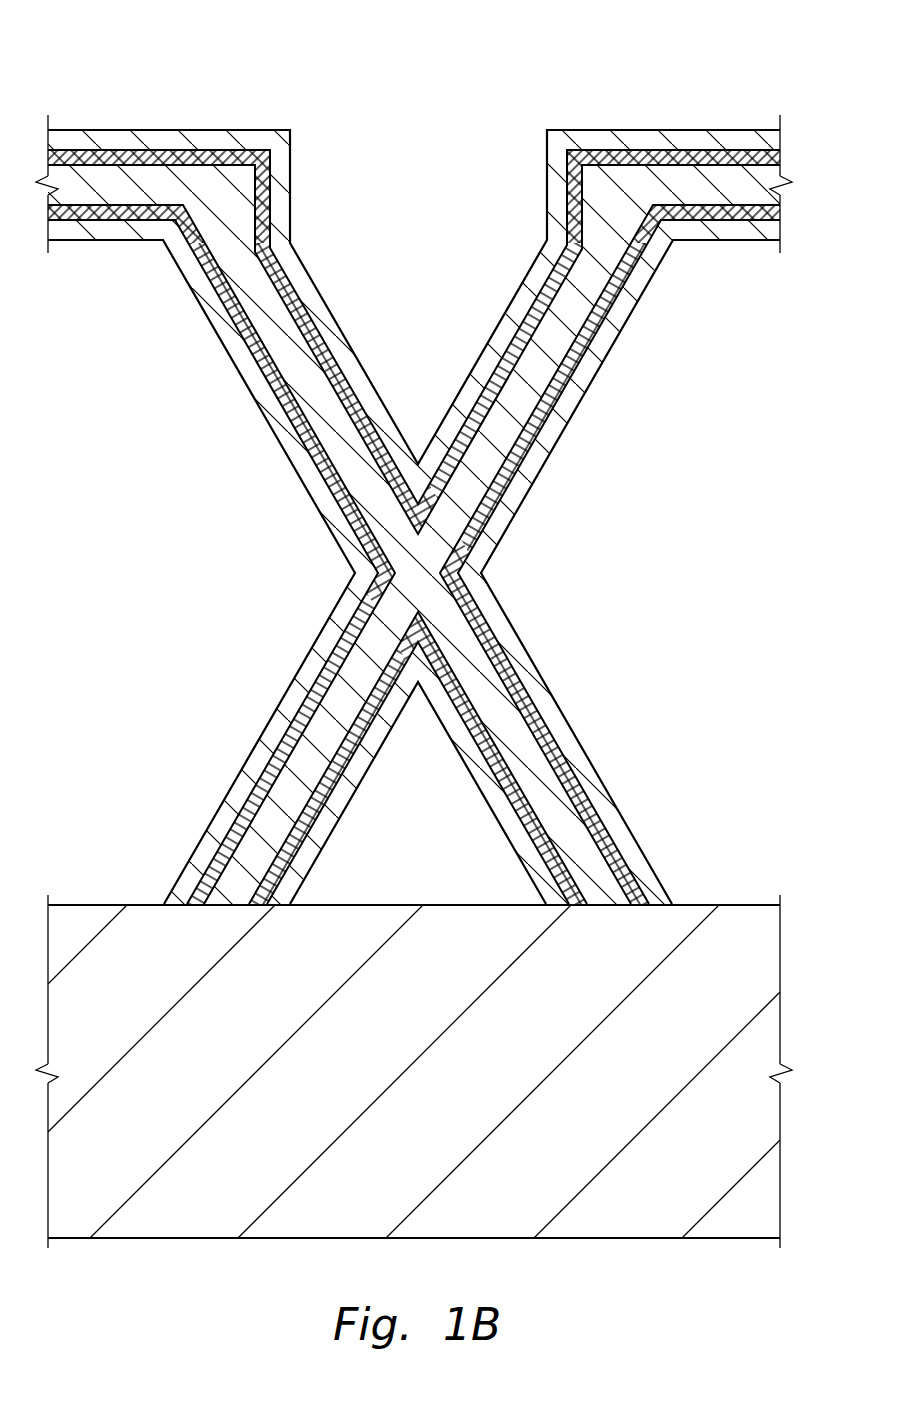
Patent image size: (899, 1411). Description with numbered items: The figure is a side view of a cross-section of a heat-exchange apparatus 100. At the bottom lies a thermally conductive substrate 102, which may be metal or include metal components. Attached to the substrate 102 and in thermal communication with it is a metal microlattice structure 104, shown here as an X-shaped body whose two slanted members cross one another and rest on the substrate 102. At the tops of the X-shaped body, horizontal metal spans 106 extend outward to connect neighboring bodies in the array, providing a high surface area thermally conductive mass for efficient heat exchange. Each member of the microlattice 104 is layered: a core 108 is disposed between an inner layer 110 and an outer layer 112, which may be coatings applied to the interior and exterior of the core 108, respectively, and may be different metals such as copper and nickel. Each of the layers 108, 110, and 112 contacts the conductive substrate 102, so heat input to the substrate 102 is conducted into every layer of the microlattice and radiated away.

The heat-exchange apparatus 100 is at (111, 60).
The thermally conductive substrate 102 is at (163, 1240).
The metal microlattice structure 104 is at (146, 556).
The metal spans 106 is at (98, 241).
The core 108 is at (298, 724).
The inner layer 110 is at (278, 805).
The outer layer 112 is at (215, 838).